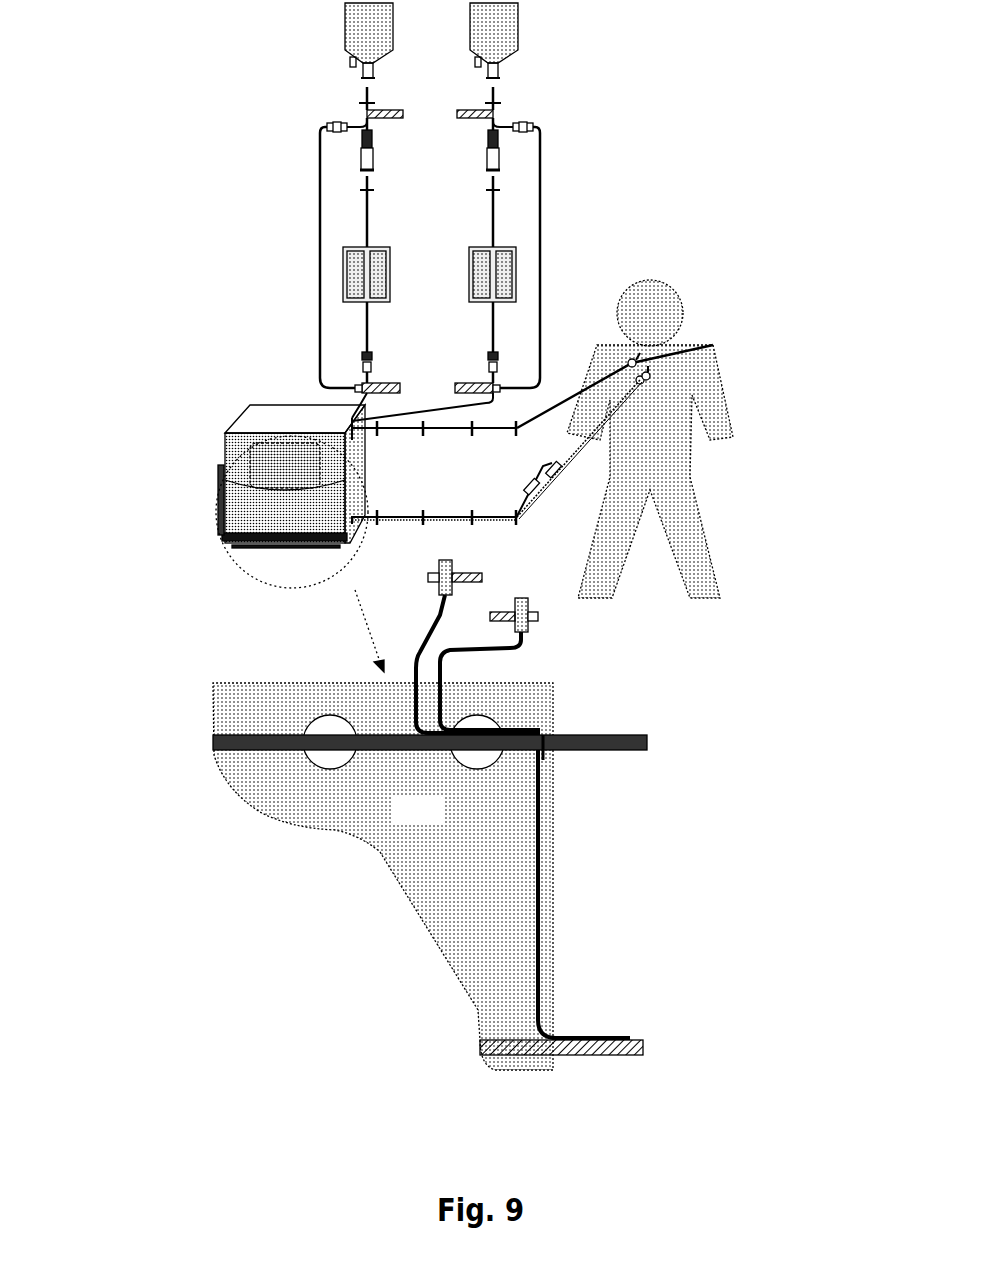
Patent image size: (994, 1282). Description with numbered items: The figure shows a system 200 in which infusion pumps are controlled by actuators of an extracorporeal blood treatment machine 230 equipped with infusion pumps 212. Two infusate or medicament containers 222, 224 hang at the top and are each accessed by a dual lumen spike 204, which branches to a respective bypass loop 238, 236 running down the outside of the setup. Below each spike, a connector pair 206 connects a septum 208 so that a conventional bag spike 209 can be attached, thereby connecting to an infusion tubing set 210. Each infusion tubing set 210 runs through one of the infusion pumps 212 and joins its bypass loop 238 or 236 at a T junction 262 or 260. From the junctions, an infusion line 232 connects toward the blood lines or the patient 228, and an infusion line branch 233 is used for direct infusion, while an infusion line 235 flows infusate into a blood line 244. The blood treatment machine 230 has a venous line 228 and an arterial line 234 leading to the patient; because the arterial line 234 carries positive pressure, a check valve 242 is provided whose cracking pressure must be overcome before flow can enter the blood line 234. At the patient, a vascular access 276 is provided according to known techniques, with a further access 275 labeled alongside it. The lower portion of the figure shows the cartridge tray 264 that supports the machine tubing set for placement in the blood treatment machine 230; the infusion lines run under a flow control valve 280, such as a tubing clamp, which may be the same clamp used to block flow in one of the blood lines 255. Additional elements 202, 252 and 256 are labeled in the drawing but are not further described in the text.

The dialysis system 200 is at (162, 246).
The bag line 202 is at (340, 124).
The dual lumen spike 204 is at (482, 99).
The connector pair 206 is at (482, 144).
The septum 208 is at (482, 167).
The conventional bag spike 209 is at (482, 193).
The infusion tubing set 210 is at (488, 222).
The infusion pump 212 is at (482, 273).
The infusate container 222 is at (345, 35).
The infusate container 224 is at (520, 43).
The venous line 228 is at (685, 305).
The extracorporeal blood treatment machine 230 is at (268, 393).
The infusion line 232 is at (452, 404).
The infusion line branch 233 is at (446, 430).
The arterial line 234 is at (437, 520).
The infusion line 235 is at (447, 516).
The bypass loop 236 is at (545, 257).
The bypass loop 238 is at (318, 256).
The check valve 242 is at (530, 480).
The blood line 244 is at (579, 449).
The tube 252 is at (540, 863).
The blood line 255 is at (385, 750).
The rail 256 is at (580, 732).
The T junction 260 is at (505, 365).
The T junction 262 is at (348, 378).
The cartridge tray 264 is at (437, 819).
The venous access connector 275 is at (640, 357).
The vascular access 276 is at (648, 374).
The flow control valve 280 is at (512, 766).